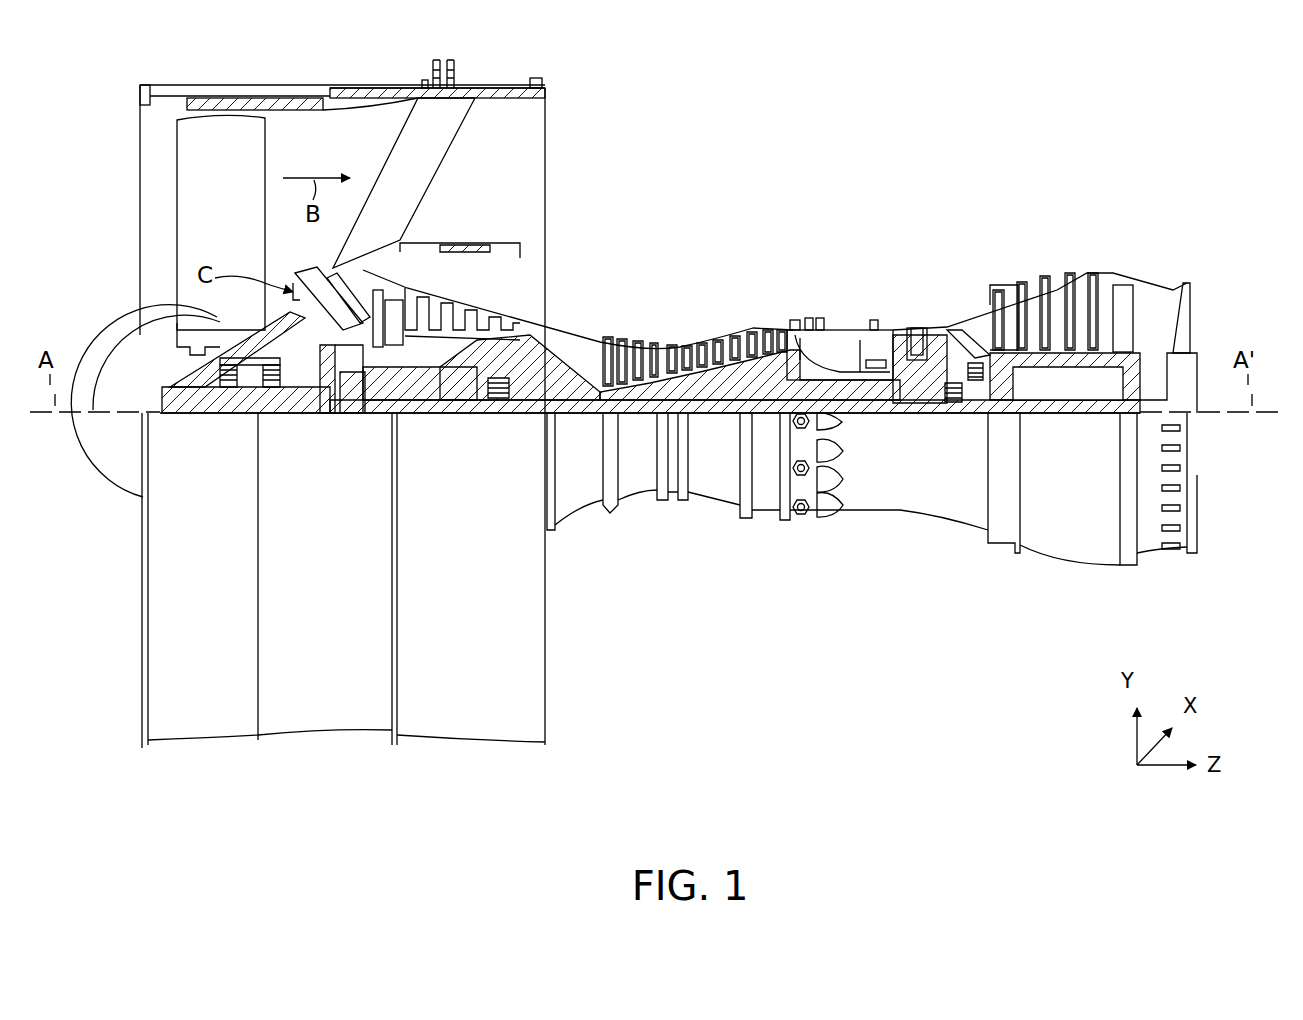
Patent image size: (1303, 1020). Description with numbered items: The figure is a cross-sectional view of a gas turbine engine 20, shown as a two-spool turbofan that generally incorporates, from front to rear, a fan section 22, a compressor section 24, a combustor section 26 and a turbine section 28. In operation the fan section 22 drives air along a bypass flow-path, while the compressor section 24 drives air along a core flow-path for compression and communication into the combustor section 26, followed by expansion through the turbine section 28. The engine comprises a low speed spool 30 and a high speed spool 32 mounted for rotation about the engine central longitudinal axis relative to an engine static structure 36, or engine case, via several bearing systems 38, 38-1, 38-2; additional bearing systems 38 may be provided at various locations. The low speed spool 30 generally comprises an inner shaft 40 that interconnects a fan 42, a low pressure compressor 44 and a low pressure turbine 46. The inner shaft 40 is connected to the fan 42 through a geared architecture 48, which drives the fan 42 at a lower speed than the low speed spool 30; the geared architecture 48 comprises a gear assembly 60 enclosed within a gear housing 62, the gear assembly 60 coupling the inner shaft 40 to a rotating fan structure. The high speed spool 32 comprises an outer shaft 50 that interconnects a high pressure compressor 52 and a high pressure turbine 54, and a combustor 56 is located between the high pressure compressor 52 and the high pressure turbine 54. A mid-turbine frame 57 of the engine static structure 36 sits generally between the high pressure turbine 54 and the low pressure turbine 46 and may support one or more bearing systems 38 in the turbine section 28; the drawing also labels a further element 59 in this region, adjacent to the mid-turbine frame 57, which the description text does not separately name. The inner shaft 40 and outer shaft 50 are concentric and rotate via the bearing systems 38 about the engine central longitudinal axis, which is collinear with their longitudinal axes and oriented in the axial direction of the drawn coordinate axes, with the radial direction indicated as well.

The gas turbine engine 20 is at (899, 124).
The fan section 22 is at (395, 70).
The compressor section 24 is at (400, 208).
The combustor section 26 is at (900, 208).
The turbine section 28 is at (1125, 208).
The low speed spool 30 is at (722, 428).
The high speed spool 32 is at (762, 383).
The engine static structure 36 is at (320, 712).
The bearing system 38 is at (962, 402).
The bearing system 38-1 is at (232, 400).
The bearing system 38-2 is at (500, 398).
The inner shaft 40 is at (567, 413).
The fan 42 is at (205, 223).
The low pressure compressor 44 is at (475, 312).
The low pressure turbine 46 is at (1056, 308).
The geared architecture 48 is at (355, 430).
The outer shaft 50 is at (835, 393).
The high pressure compressor 52 is at (702, 383).
The high pressure turbine 54 is at (915, 330).
The combustor 56 is at (838, 357).
The mid-turbine frame 57 is at (948, 350).
The turbine inlet duct 59 is at (970, 356).
The gear assembly 60 is at (387, 400).
The gear housing 62 is at (360, 368).